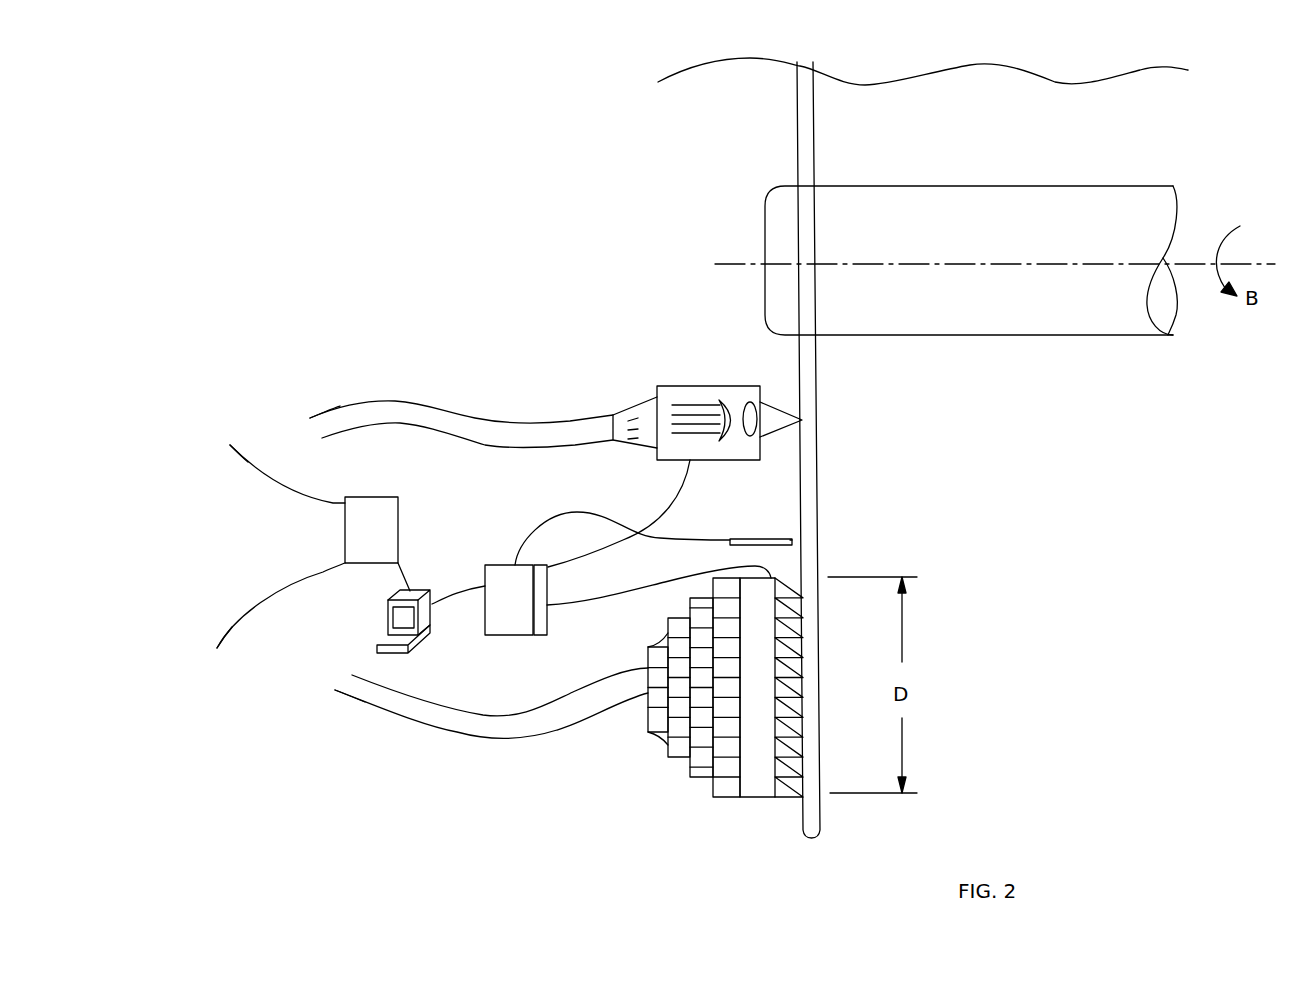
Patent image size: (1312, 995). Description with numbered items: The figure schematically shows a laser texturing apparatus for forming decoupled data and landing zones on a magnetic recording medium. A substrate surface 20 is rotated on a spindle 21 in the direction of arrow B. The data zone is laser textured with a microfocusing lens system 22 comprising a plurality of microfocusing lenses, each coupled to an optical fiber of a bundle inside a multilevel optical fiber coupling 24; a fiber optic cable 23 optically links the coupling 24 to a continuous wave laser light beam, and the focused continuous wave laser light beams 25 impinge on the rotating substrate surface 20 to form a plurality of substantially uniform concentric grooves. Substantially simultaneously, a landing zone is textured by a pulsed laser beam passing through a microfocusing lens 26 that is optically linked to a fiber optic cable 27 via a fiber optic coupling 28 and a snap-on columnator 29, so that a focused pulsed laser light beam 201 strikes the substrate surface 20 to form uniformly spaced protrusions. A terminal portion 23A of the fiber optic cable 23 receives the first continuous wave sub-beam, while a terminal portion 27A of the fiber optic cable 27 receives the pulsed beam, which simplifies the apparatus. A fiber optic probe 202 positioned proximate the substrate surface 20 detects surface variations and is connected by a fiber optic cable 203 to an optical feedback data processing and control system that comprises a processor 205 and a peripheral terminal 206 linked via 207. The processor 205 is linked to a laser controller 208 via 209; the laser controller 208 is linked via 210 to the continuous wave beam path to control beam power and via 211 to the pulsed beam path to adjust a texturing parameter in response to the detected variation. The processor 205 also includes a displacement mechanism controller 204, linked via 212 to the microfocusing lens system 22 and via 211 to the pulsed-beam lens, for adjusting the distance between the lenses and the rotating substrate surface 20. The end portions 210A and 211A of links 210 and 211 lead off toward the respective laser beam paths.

The substrate surface 20 is at (785, 110).
The spindle 21 is at (1090, 336).
The microfocusing lens system 22 is at (756, 798).
The fiber optic cable 23 is at (502, 742).
The terminal portion of fiber optic cable 23A is at (337, 693).
The multilevel optical fiber coupling 24 is at (700, 779).
The focused continuous wave laser light beams 25 is at (793, 798).
The microfocusing lens 26 is at (746, 405).
The fiber optic cable 27 is at (523, 448).
The terminal portion of fiber optic cable 27A is at (310, 415).
The fiber optic coupling 28 is at (641, 449).
The snap-on columnator 29 is at (715, 461).
The focused pulsed laser light beam 201 is at (780, 430).
The fiber optic probe 202 is at (770, 538).
The fiber optic cable 203 is at (676, 542).
The displacement mechanism controller 204 is at (540, 636).
The processor 205 is at (508, 636).
The peripheral terminal 206 is at (404, 655).
The link 207 is at (457, 597).
The laser controller 208 is at (398, 515).
The link 209 is at (403, 577).
The link 210 is at (296, 584).
The cable end 210A is at (217, 650).
The link 211 is at (297, 498).
The cable end 211A is at (232, 440).
The link 212 is at (624, 597).